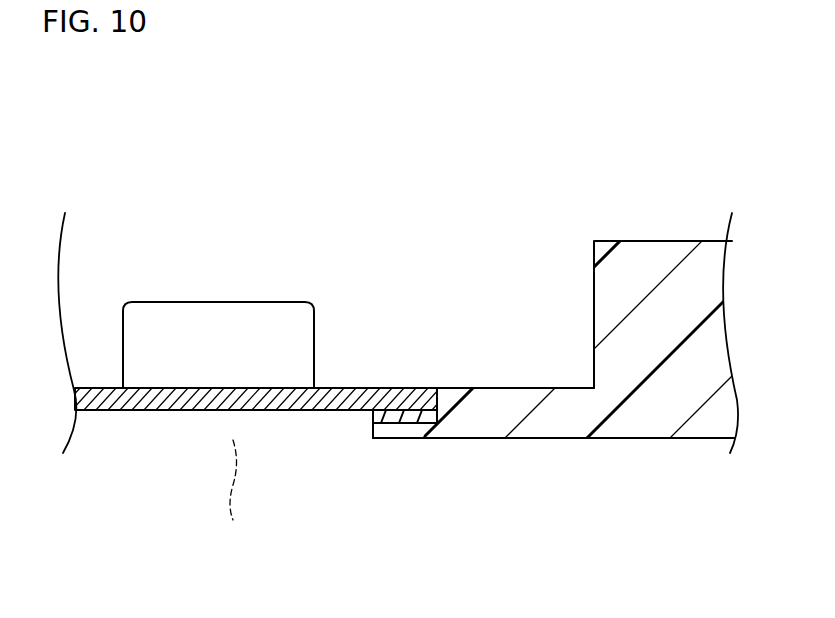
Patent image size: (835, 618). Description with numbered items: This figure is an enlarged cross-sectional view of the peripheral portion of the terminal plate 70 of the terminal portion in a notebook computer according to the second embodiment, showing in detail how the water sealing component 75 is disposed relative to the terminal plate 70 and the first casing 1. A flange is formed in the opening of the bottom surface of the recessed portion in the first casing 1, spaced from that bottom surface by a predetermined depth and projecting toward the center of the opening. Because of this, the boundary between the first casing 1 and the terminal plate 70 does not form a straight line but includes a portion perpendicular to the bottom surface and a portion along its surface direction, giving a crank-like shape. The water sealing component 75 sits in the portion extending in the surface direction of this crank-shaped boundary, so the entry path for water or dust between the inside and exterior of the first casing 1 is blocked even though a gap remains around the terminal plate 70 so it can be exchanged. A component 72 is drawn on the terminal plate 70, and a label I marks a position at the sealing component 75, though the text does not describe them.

The first casing 1 is at (712, 348).
The terminal plate 70 is at (180, 410).
The electronic component 72 is at (218, 322).
The water sealing component 75 is at (373, 414).
The interface I is at (385, 437).